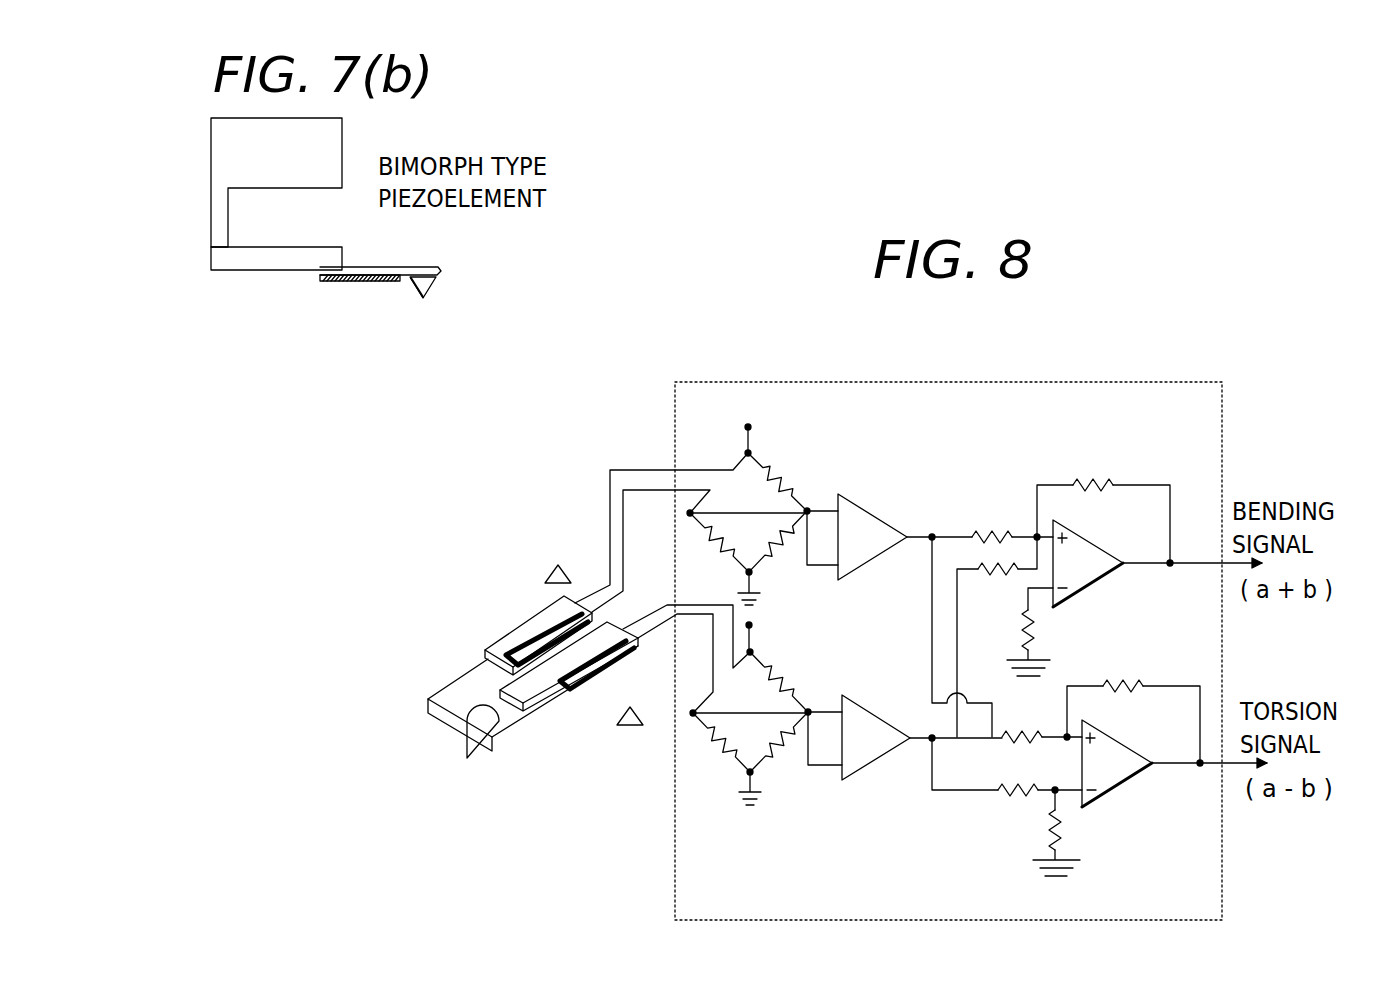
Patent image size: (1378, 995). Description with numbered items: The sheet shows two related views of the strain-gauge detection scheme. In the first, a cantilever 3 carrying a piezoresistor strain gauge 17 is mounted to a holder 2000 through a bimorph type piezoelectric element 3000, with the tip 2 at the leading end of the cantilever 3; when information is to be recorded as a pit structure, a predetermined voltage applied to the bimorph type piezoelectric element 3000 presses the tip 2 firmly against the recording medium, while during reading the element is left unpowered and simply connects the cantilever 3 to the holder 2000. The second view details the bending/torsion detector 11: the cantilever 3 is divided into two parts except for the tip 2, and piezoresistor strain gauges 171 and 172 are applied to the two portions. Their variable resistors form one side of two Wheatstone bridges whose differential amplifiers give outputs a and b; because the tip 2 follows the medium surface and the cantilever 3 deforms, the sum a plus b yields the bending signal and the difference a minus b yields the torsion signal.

The holder 2000 is at (330, 141).
The bimorph type piezoelectric element 3000 is at (333, 262).
The cantilever 3 is at (445, 267).
In FIG. 8, the cantilever 3 is at (515, 730).
The piezoresistor strain gauge 17 is at (338, 342).
The tip 2 is at (427, 292).
In FIG. 8, the tip 2 is at (467, 740).
In FIG. 8, the bending/torsion detector 11 is at (1080, 381).
In FIG. 8, the piezoresistor strain gauge 171 is at (515, 647).
In FIG. 8, the piezoresistor strain gauge 172 is at (561, 685).